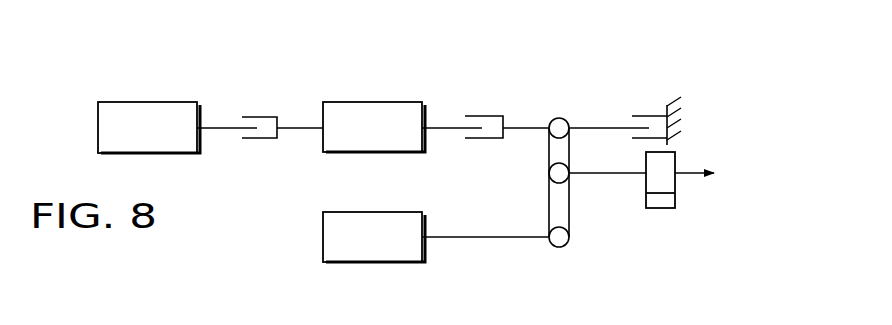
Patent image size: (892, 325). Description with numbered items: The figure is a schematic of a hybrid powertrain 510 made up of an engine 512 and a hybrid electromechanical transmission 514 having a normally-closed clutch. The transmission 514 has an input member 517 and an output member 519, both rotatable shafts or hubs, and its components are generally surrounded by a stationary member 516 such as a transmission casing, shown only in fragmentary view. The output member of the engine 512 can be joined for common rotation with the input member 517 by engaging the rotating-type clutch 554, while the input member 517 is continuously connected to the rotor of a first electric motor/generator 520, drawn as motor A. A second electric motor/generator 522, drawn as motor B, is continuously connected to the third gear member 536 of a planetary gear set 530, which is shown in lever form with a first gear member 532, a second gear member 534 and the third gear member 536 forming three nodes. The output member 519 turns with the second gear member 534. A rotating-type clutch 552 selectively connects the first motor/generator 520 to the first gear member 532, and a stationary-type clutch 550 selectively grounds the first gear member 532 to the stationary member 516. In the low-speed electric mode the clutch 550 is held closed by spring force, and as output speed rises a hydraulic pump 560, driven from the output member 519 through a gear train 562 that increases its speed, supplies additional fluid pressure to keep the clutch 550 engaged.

The hybrid powertrain 510 is at (535, 60).
The engine 512 is at (98, 128).
The hybrid electromechanical transmission 514 is at (444, 42).
The stationary member 516 is at (682, 108).
The input member 517 is at (300, 126).
The output member 519 is at (701, 176).
The first electric motor/generator 520 is at (423, 113).
The second electric motor/generator 522 is at (323, 237).
The planetary gear set 530 is at (560, 184).
The first gear member 532 is at (561, 118).
The second gear member 534 is at (549, 176).
The third gear member 536 is at (572, 243).
The clutch 550 is at (621, 136).
The clutch 552 is at (463, 136).
The clutch 554 is at (230, 138).
The hydraulic pump 560 is at (712, 192).
The gear train 562 is at (676, 165).